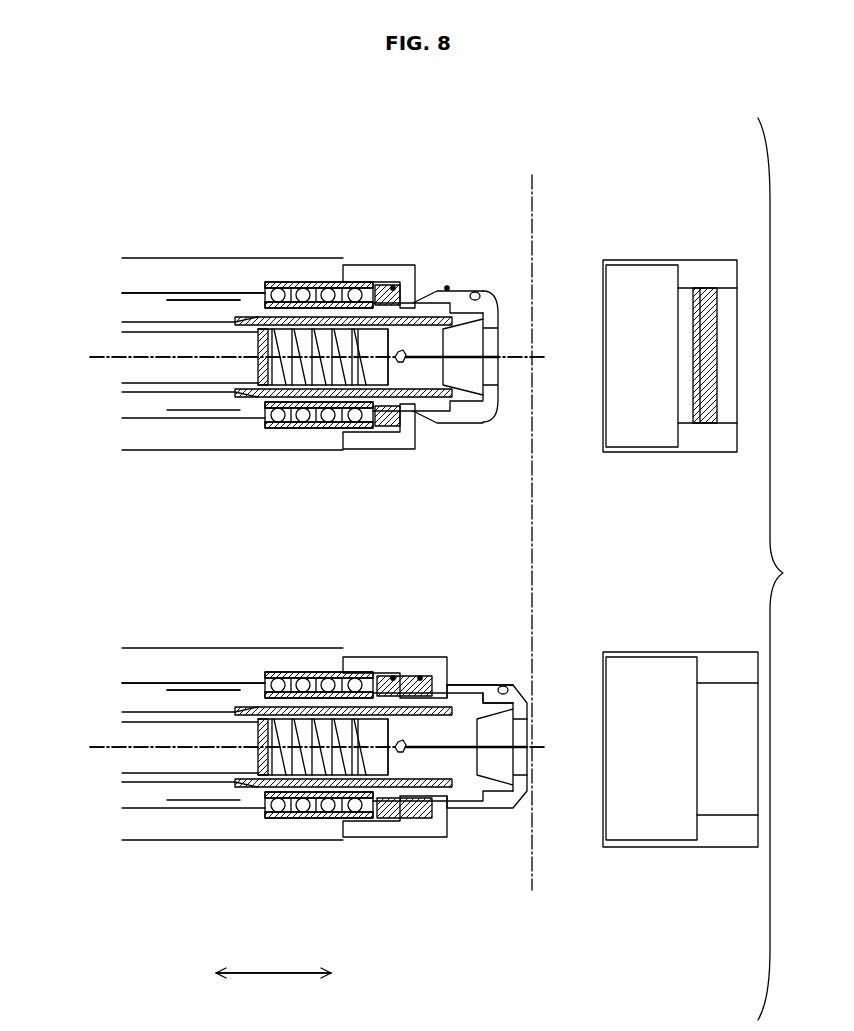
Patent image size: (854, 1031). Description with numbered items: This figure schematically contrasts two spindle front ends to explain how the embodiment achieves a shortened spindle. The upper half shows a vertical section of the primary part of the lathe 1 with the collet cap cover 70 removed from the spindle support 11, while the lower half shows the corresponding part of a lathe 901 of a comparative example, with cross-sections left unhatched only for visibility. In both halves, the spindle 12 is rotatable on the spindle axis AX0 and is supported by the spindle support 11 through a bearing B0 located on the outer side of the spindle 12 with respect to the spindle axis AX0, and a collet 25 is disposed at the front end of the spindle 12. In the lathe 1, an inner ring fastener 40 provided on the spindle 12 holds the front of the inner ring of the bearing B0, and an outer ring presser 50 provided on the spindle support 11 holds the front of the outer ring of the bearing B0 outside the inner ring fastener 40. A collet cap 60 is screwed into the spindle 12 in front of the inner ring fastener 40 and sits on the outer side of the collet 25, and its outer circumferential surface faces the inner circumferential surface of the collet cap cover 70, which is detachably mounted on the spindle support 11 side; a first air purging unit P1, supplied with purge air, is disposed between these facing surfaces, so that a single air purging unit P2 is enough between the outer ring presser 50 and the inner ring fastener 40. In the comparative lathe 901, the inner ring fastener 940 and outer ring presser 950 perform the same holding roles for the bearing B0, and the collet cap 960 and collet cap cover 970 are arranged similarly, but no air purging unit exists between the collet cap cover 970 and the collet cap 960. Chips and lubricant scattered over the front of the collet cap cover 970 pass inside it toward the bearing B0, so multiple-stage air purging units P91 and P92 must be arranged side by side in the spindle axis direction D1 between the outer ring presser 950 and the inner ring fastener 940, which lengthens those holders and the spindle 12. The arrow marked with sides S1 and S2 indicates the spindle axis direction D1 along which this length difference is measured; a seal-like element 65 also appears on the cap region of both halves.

The lathe 1 is at (92, 208).
The lathe of a comparative example 901 is at (102, 609).
The spindle support 11 is at (156, 452).
The spindle 12 is at (184, 292).
The spindle axis AX0 is at (113, 345).
The bearing B0 is at (358, 294).
The inner ring fastener 40 is at (379, 294).
The outer ring presser 50 is at (398, 266).
The second air purging unit P2 is at (392, 286).
The first air purging unit P1 is at (447, 286).
The O-ring 65 is at (476, 291).
The collet cap 60 is at (490, 292).
The collet 25 is at (470, 378).
The collet cap cover 70 is at (706, 260).
The inner ring fastener 940 is at (379, 686).
The outer ring presser 950 is at (402, 657).
The second air purging unit P92 is at (393, 676).
The first air purging unit P91 is at (421, 676).
The collet cap 960 is at (483, 680).
The collet cap cover 970 is at (711, 652).
The first side S1 is at (339, 973).
The second side S2 is at (257, 973).
The spindle axis direction D1 is at (273, 989).